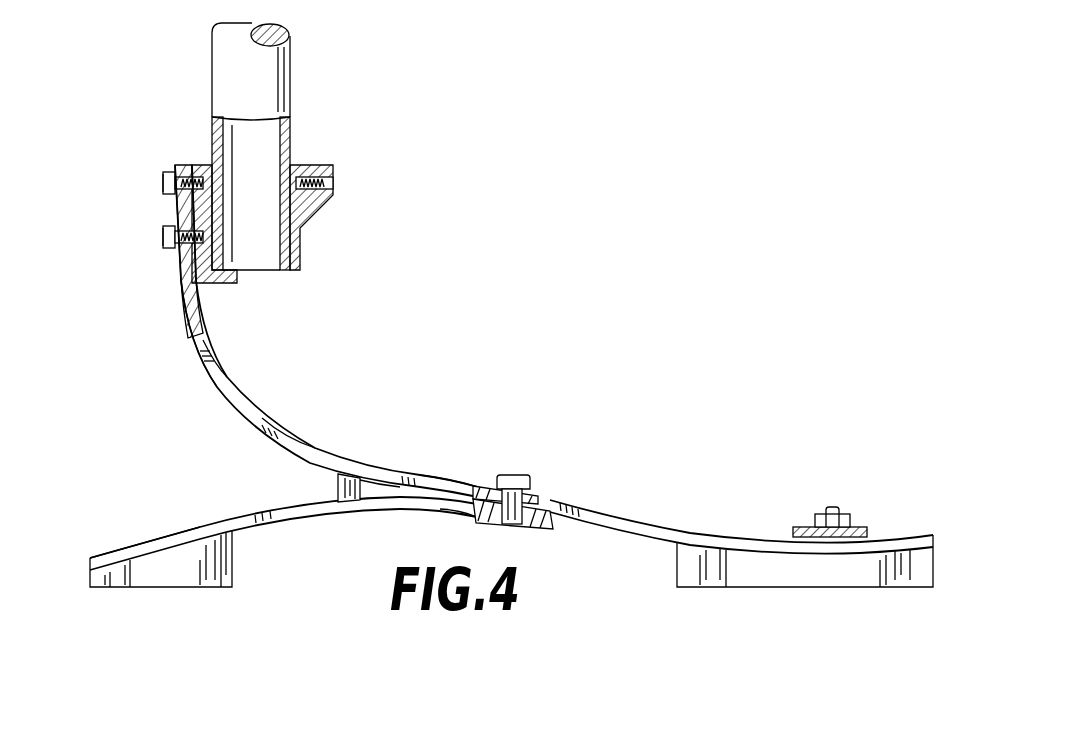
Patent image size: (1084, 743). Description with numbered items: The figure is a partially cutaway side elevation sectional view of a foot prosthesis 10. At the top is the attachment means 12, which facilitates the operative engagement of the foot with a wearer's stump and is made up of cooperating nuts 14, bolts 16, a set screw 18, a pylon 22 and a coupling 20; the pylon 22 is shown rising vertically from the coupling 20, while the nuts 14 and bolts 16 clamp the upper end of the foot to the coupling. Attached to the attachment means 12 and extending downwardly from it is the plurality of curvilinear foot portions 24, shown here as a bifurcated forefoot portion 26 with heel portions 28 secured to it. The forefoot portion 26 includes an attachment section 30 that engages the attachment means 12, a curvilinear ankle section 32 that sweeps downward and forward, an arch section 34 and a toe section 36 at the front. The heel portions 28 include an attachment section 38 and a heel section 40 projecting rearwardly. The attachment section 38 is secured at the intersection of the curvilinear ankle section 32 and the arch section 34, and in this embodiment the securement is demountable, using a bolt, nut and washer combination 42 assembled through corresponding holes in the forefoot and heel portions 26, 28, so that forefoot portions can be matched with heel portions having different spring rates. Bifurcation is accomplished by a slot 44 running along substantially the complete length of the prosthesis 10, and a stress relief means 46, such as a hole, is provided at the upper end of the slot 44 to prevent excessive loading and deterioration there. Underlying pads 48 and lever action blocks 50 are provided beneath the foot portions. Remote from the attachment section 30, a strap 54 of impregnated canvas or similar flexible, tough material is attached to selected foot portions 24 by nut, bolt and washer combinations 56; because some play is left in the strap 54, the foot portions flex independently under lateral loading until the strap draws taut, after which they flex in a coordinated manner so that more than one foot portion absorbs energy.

The foot prosthesis 10 is at (368, 442).
The attachment means 12 is at (296, 199).
The nuts 14 is at (170, 170).
The bolts 16 is at (163, 197).
The set screw 18 is at (335, 184).
The coupling 20 is at (312, 165).
The pylon 22 is at (280, 86).
The curvilinear foot portions 24 is at (302, 331).
The forefoot portion 26 is at (232, 380).
The heel portions 28 is at (283, 533).
The attachment section 30 is at (182, 302).
The curvilinear ankle section 32 is at (225, 395).
The arch section 34 is at (430, 478).
The toe section 36 is at (893, 528).
The attachment section 38 is at (455, 512).
The heel section 40 is at (183, 530).
The bolt, nut and washer combinations 42 is at (518, 480).
The slot 44 is at (303, 448).
The stress relief means 46 is at (213, 355).
The pads 48 is at (163, 590).
The lever action blocks 50 is at (335, 490).
The strap 54 is at (795, 526).
The nut, bolt and washer combinations 56 is at (838, 512).